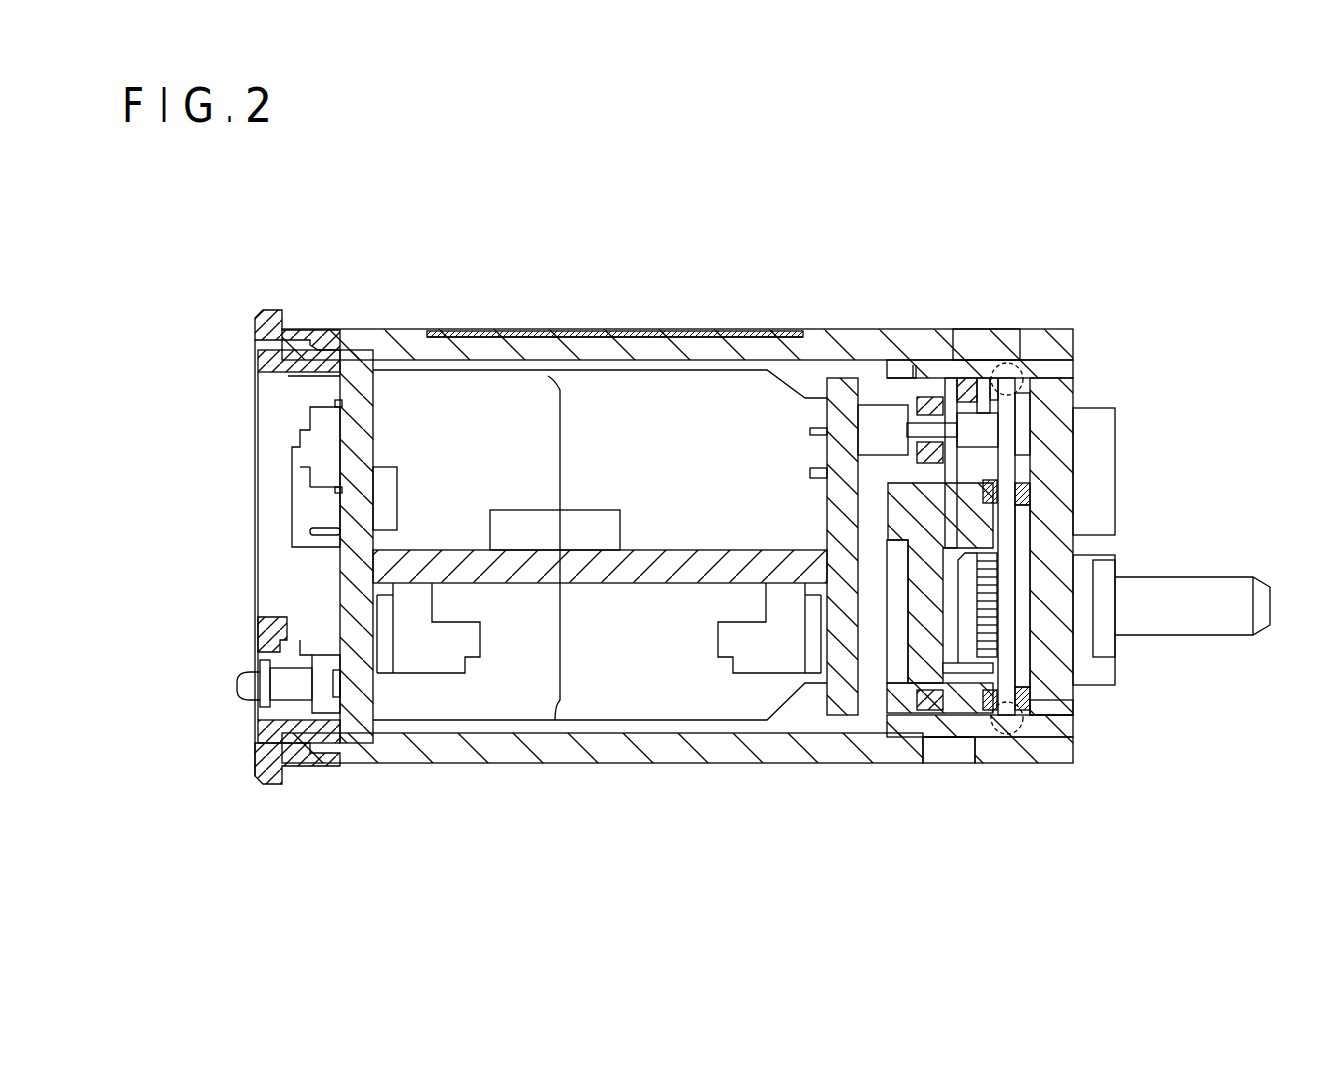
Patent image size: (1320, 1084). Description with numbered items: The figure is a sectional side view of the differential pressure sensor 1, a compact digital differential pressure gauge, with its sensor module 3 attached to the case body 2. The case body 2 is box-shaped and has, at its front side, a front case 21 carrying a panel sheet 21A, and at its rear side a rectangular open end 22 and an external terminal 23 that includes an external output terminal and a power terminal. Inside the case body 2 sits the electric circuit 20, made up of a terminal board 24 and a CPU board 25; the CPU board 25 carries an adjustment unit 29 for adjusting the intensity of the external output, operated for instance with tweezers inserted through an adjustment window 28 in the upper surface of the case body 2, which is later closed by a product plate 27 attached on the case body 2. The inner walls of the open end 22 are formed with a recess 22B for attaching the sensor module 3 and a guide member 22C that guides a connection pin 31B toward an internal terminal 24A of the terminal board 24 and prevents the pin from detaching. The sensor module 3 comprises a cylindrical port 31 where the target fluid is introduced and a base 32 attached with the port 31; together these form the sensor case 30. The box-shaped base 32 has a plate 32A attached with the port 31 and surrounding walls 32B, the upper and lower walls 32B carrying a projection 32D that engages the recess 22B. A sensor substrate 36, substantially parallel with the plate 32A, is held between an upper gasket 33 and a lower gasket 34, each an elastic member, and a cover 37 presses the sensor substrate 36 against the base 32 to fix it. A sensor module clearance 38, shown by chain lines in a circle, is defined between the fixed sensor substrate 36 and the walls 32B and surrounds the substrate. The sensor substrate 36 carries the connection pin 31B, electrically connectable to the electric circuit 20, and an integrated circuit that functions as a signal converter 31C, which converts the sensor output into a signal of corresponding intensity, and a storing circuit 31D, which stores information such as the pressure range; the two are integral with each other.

The differential pressure sensor 1 is at (718, 188).
The case body 2 is at (603, 261).
The sensor module 3 is at (1185, 392).
The electric circuit 20 is at (690, 443).
The front case 21 is at (272, 308).
The panel sheet 21A is at (252, 510).
The open end 22 is at (1076, 372).
The recess 22B is at (953, 330).
The guide member 22C is at (916, 380).
The external terminal 23 is at (1115, 450).
The terminal board 24 is at (827, 502).
The internal terminal 24A is at (878, 403).
The CPU board 25 is at (642, 552).
The product plate 27 is at (547, 330).
The adjustment window 28 is at (500, 336).
The adjustment unit 29 is at (513, 510).
The sensor case 30 is at (1160, 795).
The port 31 is at (1200, 638).
The connection pin 31B is at (935, 428).
The signal converter 31C is at (965, 625).
The storing circuit 31D is at (973, 710).
The base 32 is at (1012, 662).
The plate 32A is at (1068, 745).
The walls 32B is at (1035, 345).
The projection 32D is at (930, 397).
The upper gasket 33 is at (1050, 520).
The lower gasket 34 is at (1030, 490).
The sensor substrate 36 is at (1027, 705).
The cover 37 is at (906, 712).
The sensor module clearance 38 is at (1006, 372).